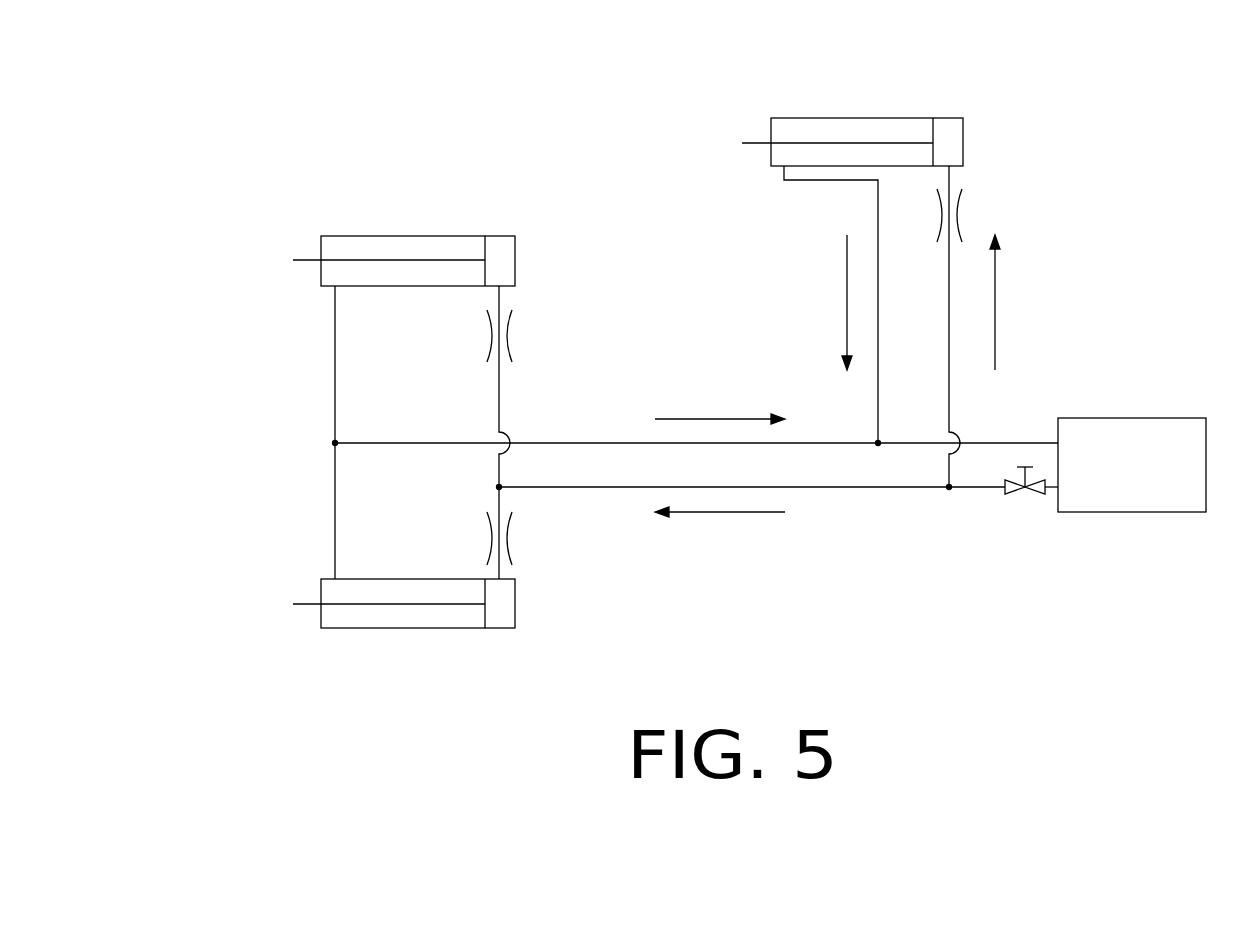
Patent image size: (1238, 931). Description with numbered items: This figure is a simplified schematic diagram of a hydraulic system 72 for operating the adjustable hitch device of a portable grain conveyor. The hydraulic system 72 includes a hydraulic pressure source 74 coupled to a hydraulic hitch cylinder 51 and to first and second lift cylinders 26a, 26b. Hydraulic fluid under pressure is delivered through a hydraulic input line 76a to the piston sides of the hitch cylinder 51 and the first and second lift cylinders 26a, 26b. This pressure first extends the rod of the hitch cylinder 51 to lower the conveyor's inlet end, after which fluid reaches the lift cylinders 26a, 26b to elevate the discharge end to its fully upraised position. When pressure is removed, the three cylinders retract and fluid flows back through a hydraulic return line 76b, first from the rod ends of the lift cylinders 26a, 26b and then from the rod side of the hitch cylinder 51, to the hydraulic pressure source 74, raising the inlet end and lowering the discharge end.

The hydraulic system 72 is at (240, 547).
The first lift cylinder 26a is at (333, 250).
The second lift cylinder 26b is at (343, 617).
The hydraulic hitch cylinder 51 is at (907, 125).
The hydraulic pressure source 74 is at (1140, 416).
The hydraulic input line 76a is at (833, 487).
The hydraulic return line 76b is at (593, 442).